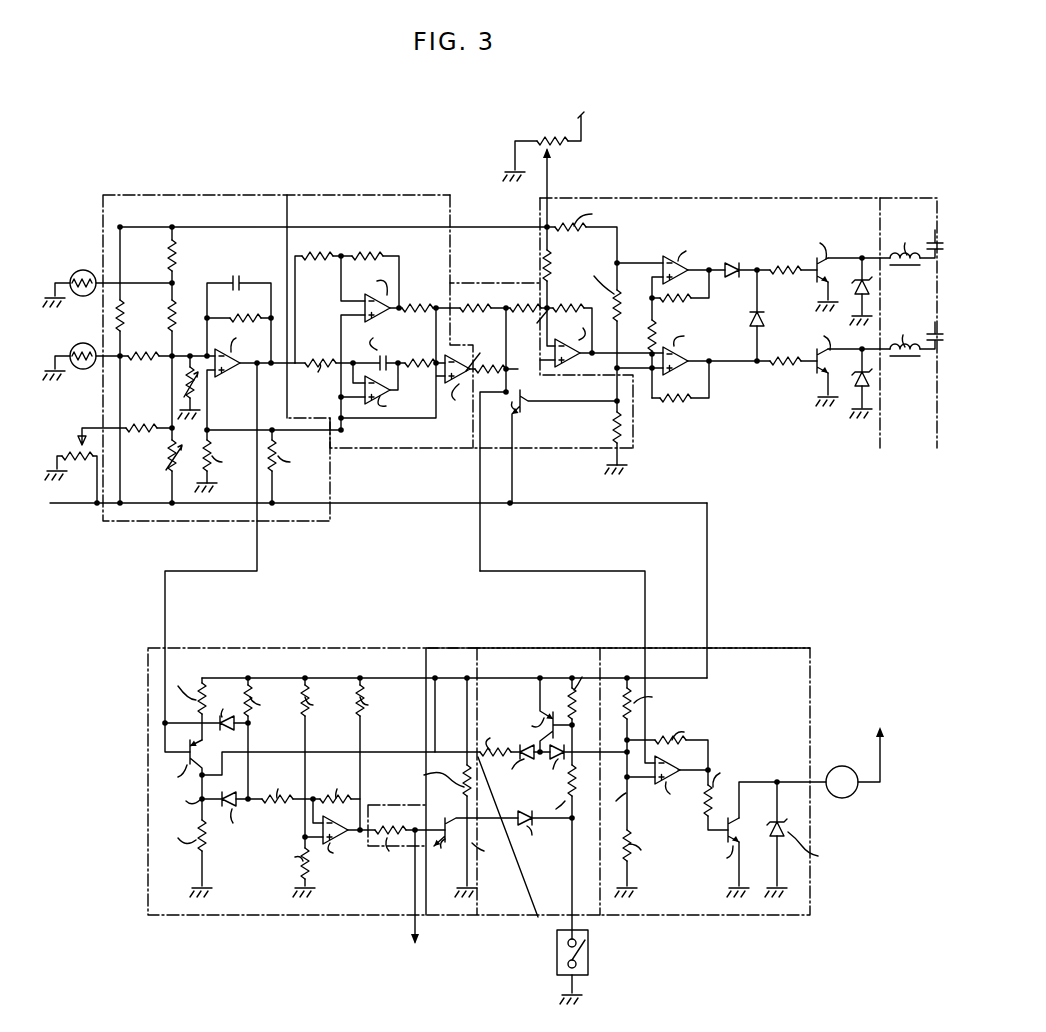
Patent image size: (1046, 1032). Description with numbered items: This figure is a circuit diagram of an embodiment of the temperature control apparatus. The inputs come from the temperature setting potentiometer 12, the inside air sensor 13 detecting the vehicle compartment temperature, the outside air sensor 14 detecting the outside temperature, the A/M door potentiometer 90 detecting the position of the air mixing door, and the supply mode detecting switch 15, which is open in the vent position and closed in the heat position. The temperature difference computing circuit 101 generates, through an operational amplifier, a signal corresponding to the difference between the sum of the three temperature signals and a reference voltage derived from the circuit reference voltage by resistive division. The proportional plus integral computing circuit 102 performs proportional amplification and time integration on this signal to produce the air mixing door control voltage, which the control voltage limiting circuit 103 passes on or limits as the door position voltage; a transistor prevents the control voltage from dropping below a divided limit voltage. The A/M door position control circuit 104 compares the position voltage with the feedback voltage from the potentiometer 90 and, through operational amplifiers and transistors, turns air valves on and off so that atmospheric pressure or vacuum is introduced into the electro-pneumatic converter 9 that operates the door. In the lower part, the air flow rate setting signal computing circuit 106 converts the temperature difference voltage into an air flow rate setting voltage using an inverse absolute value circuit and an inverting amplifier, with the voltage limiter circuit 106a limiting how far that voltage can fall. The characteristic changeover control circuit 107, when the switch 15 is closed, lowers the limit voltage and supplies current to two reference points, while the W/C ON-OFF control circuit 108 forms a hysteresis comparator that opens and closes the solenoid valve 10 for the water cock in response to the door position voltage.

The electro-pneumatic converter 9 is at (924, 198).
The solenoid valve 10 is at (848, 796).
The temperature setting potentiometer 12 is at (72, 445).
The inside air sensor 13 is at (78, 269).
The outside air sensor 14 is at (78, 356).
The supply mode detecting switch 15 is at (590, 959).
The A/M door potentiometer 90 is at (540, 136).
The temperature difference computing circuit 101 is at (247, 196).
The proportional plus integral computing circuit 102 is at (382, 196).
The control voltage limiting circuit 103 is at (515, 282).
The A/M door position control circuit 104 is at (715, 198).
The air flow rate setting signal computing circuit 106 is at (318, 648).
The voltage limiter circuit 106a is at (460, 649).
The characteristic changeover control circuit 107 is at (530, 648).
The W/C ON-OFF control circuit 108 is at (734, 649).